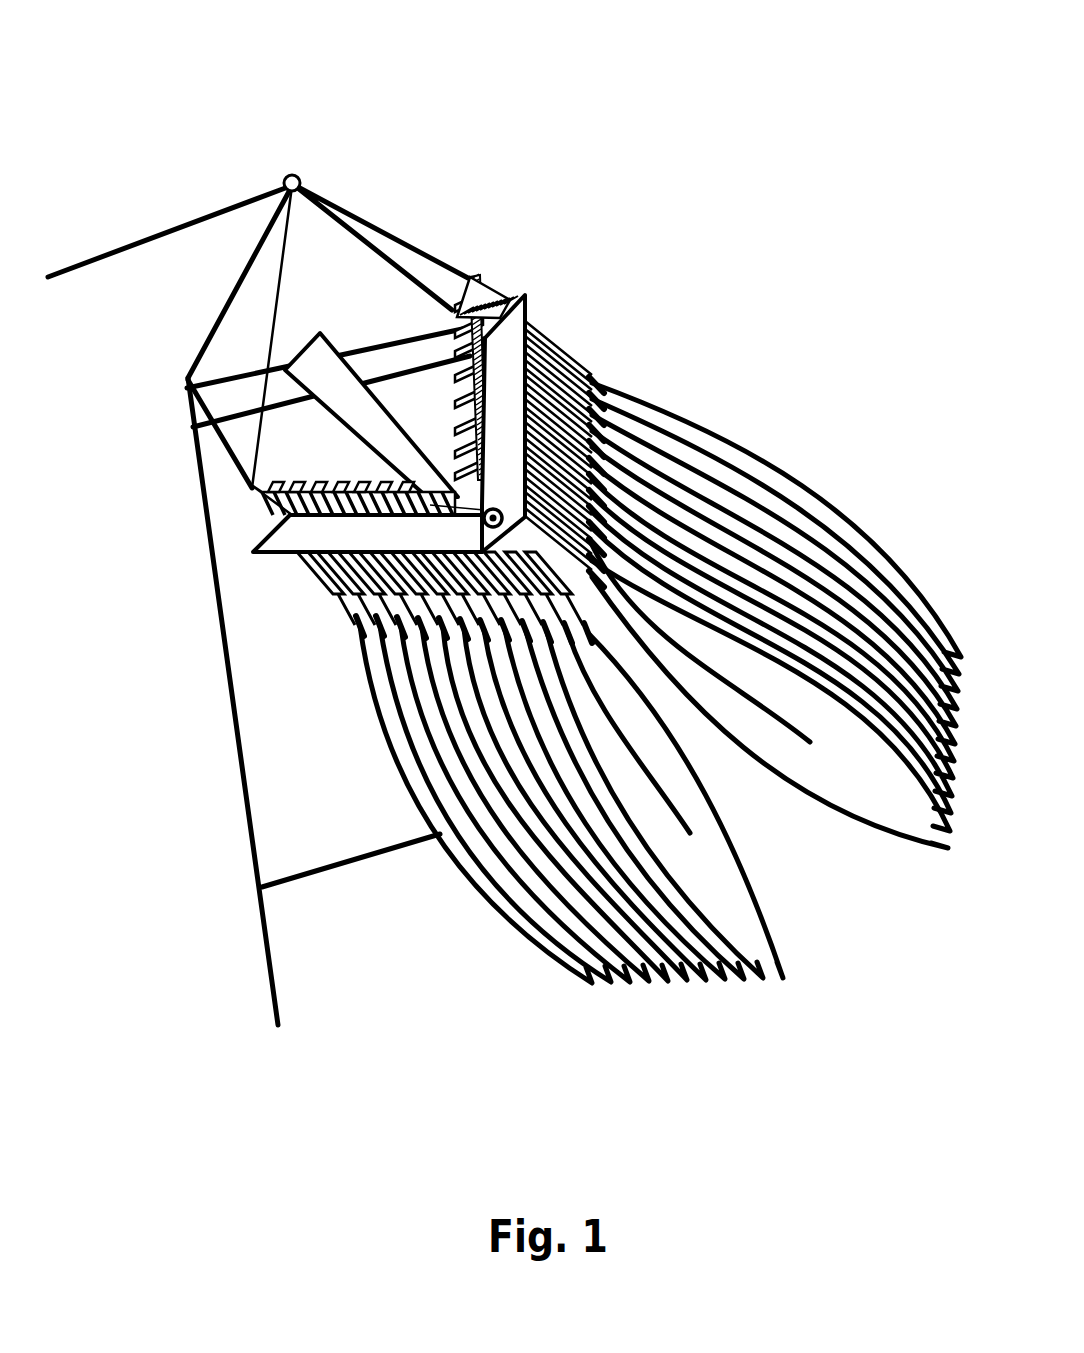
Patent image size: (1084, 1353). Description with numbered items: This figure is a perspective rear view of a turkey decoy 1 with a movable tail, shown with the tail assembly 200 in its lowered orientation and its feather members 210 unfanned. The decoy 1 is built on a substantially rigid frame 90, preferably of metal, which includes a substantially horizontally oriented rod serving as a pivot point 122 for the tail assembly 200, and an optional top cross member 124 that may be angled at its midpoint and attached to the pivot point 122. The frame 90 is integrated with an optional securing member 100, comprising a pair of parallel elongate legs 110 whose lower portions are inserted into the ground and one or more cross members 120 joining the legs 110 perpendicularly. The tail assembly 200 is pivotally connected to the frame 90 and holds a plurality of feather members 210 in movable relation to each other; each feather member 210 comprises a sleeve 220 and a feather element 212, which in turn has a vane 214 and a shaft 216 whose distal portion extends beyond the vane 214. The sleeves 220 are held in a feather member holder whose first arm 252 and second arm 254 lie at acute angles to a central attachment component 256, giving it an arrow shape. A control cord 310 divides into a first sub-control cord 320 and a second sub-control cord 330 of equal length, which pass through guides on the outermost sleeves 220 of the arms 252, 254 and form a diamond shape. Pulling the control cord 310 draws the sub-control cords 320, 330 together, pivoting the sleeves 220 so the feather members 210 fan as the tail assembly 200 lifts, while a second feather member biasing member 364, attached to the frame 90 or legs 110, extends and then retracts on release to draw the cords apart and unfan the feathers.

The turkey decoy 1 is at (581, 133).
The frame 90 is at (370, 332).
The securing member 100 is at (275, 581).
The leg 110 is at (230, 703).
The cross member 120 is at (355, 866).
The pivot point 122 is at (345, 352).
The top cross member 124 is at (250, 258).
The tail assembly 200 is at (658, 640).
The feather member 210 is at (775, 578).
The feather element 212 is at (834, 520).
The vane 214 is at (728, 887).
The shaft 216 is at (746, 697).
The sleeve 220 is at (543, 330).
The first arm 252 is at (510, 400).
The second arm 254 is at (337, 533).
The central attachment component 256 is at (363, 412).
The control cord 310 is at (153, 236).
The first sub-control cord 320 is at (395, 240).
The second sub-control cord 330 is at (273, 325).
The second feather member biasing member 364 is at (210, 413).